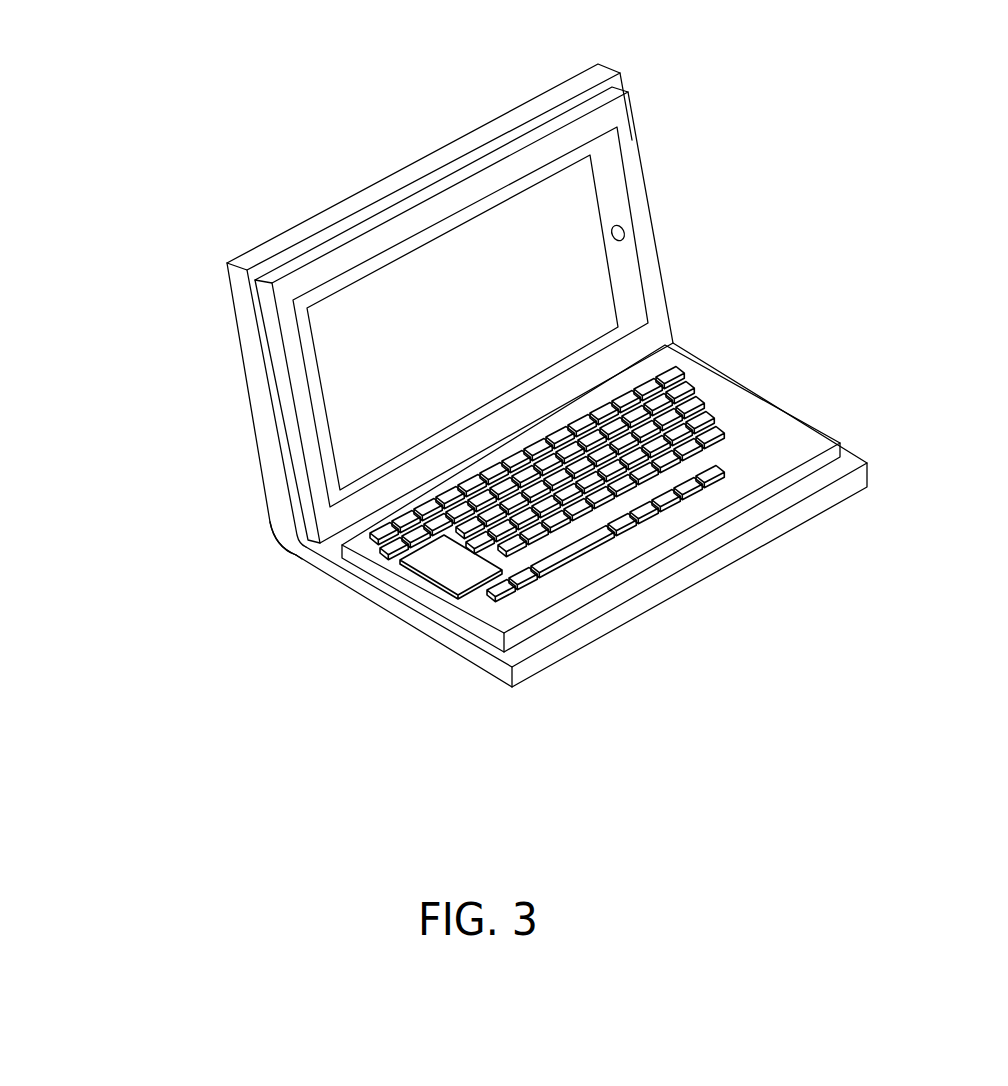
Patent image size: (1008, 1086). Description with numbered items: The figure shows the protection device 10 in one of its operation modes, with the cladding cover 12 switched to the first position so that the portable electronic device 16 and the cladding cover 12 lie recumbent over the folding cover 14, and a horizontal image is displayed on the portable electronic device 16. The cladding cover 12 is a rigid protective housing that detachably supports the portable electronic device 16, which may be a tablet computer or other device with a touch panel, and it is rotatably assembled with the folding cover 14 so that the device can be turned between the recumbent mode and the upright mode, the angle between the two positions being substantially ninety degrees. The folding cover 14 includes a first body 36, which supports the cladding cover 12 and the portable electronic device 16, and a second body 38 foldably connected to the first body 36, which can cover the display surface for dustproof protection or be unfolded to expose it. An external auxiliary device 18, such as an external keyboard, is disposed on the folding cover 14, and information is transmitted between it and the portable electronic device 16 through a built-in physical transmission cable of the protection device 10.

The protection device 10 is at (108, 289).
The cladding cover 12 is at (274, 295).
The folding cover 14 is at (260, 397).
The portable electronic device 16 is at (615, 182).
The external auxiliary device 18 is at (812, 445).
The first body 36 is at (272, 495).
The second body 38 is at (430, 624).